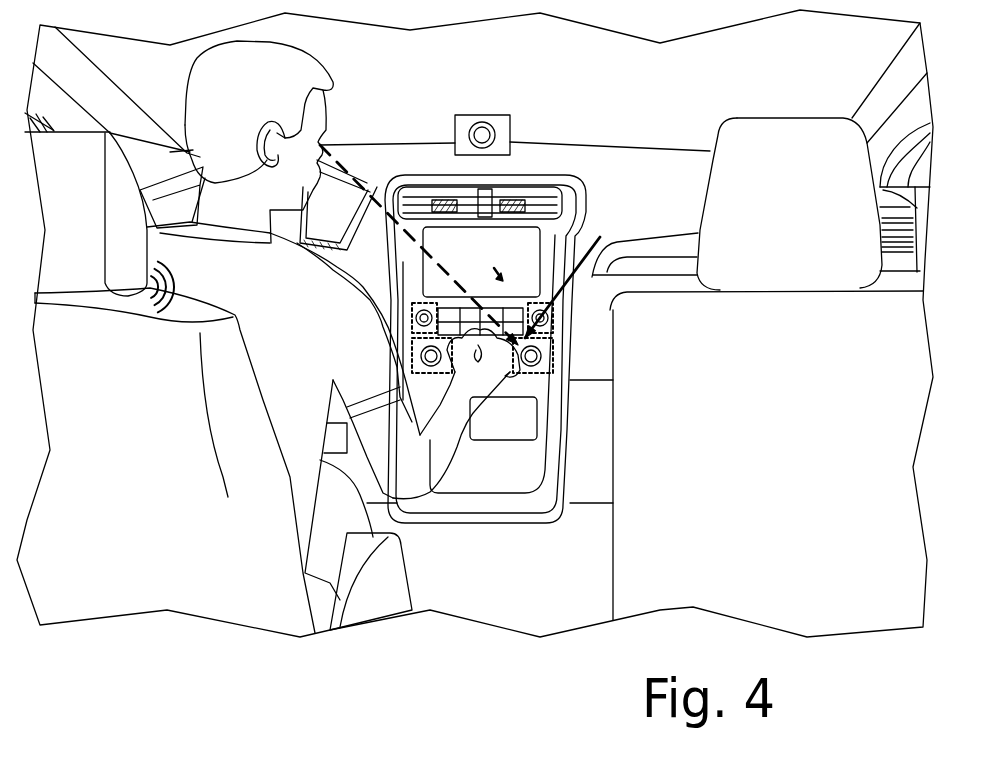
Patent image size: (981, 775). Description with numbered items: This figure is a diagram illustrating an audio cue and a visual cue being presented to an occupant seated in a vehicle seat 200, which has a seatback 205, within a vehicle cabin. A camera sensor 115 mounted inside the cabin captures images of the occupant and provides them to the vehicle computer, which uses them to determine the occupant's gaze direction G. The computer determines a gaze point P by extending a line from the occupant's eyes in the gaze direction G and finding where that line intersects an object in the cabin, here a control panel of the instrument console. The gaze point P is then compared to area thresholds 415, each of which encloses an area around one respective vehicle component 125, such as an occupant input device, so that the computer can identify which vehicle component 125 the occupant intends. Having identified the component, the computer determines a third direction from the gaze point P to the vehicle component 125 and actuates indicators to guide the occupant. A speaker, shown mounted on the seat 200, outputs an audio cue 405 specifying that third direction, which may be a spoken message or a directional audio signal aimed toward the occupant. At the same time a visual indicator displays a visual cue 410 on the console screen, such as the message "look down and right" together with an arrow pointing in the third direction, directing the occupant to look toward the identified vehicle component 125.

The sensor 115 is at (512, 137).
The visual cue 410 is at (443, 233).
The area threshold 415 is at (412, 320).
The vehicle component 125 is at (523, 360).
The audio cue 405 is at (147, 318).
The seatback 205 is at (228, 500).
The vehicle seat 200 is at (578, 570).
The gaze direction G is at (363, 188).
The gaze point P is at (569, 278).